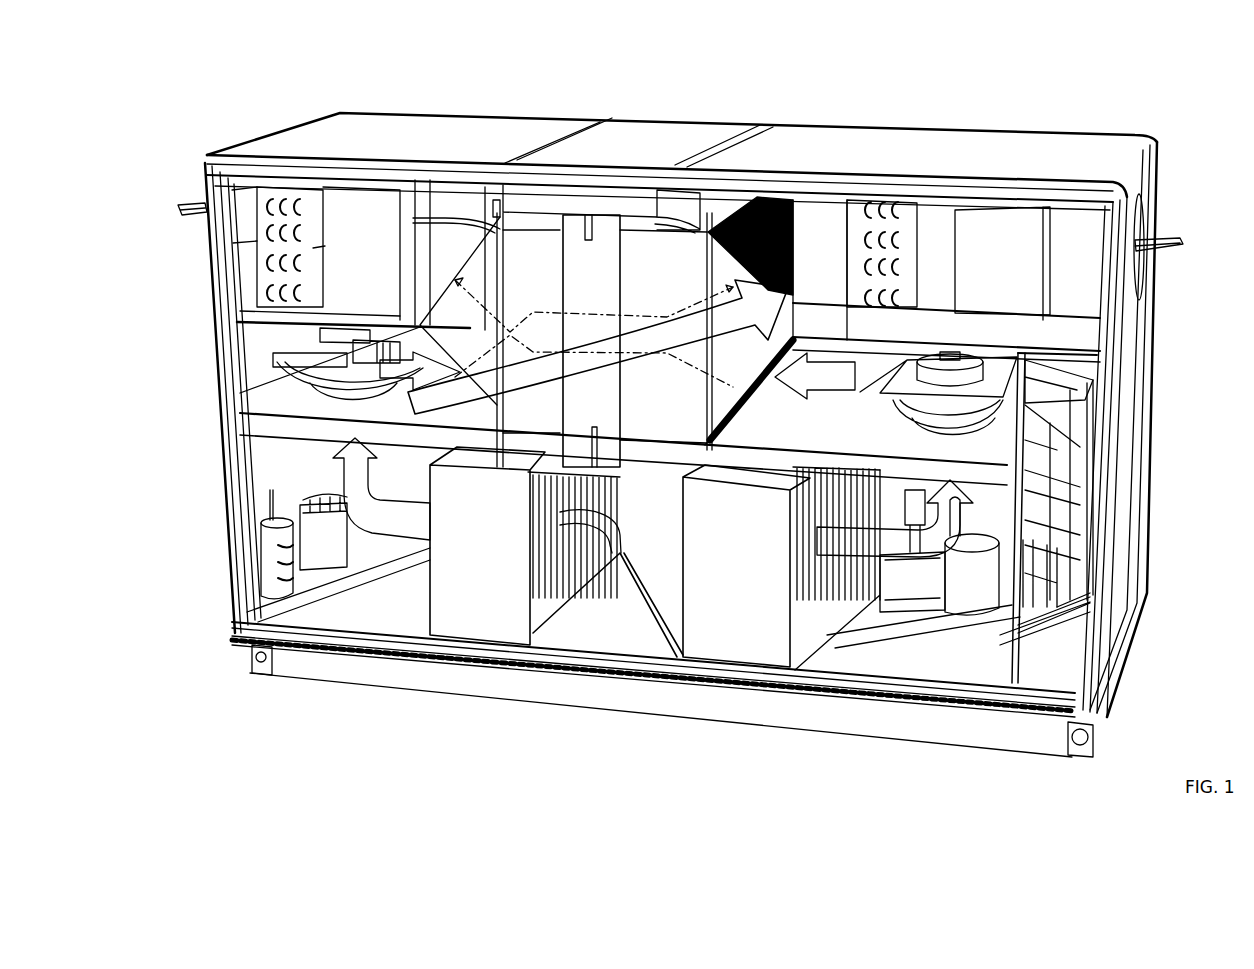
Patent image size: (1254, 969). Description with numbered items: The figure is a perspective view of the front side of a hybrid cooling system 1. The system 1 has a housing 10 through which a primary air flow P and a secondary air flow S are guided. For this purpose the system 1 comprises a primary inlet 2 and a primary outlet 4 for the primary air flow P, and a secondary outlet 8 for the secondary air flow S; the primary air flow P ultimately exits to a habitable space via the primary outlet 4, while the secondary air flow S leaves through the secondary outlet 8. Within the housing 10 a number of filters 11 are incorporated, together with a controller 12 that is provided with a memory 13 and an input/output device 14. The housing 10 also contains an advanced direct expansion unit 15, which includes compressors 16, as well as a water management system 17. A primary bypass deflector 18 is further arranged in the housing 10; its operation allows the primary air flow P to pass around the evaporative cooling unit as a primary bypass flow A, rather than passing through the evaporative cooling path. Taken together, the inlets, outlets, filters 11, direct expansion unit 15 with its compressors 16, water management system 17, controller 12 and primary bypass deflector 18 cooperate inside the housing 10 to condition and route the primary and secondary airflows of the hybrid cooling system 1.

The hybrid cooling system 1 is at (275, 108).
The primary inlet 2 is at (580, 572).
The primary outlet 4 is at (1143, 228).
The secondary outlet 8 is at (205, 192).
The housing 10 is at (1112, 148).
The filters 11 is at (480, 613).
The controller 12 is at (1073, 497).
The memory 13 is at (1047, 417).
The input/output device 14 is at (1087, 383).
The advanced direct expansion (DX) unit 15 is at (948, 600).
The compressors 16 is at (967, 557).
The water management system 17 is at (263, 598).
The primary bypass deflector 18 is at (573, 248).
The primary bypass flow A is at (693, 330).
The primary air flow P is at (788, 312).
The secondary air flow S is at (180, 215).